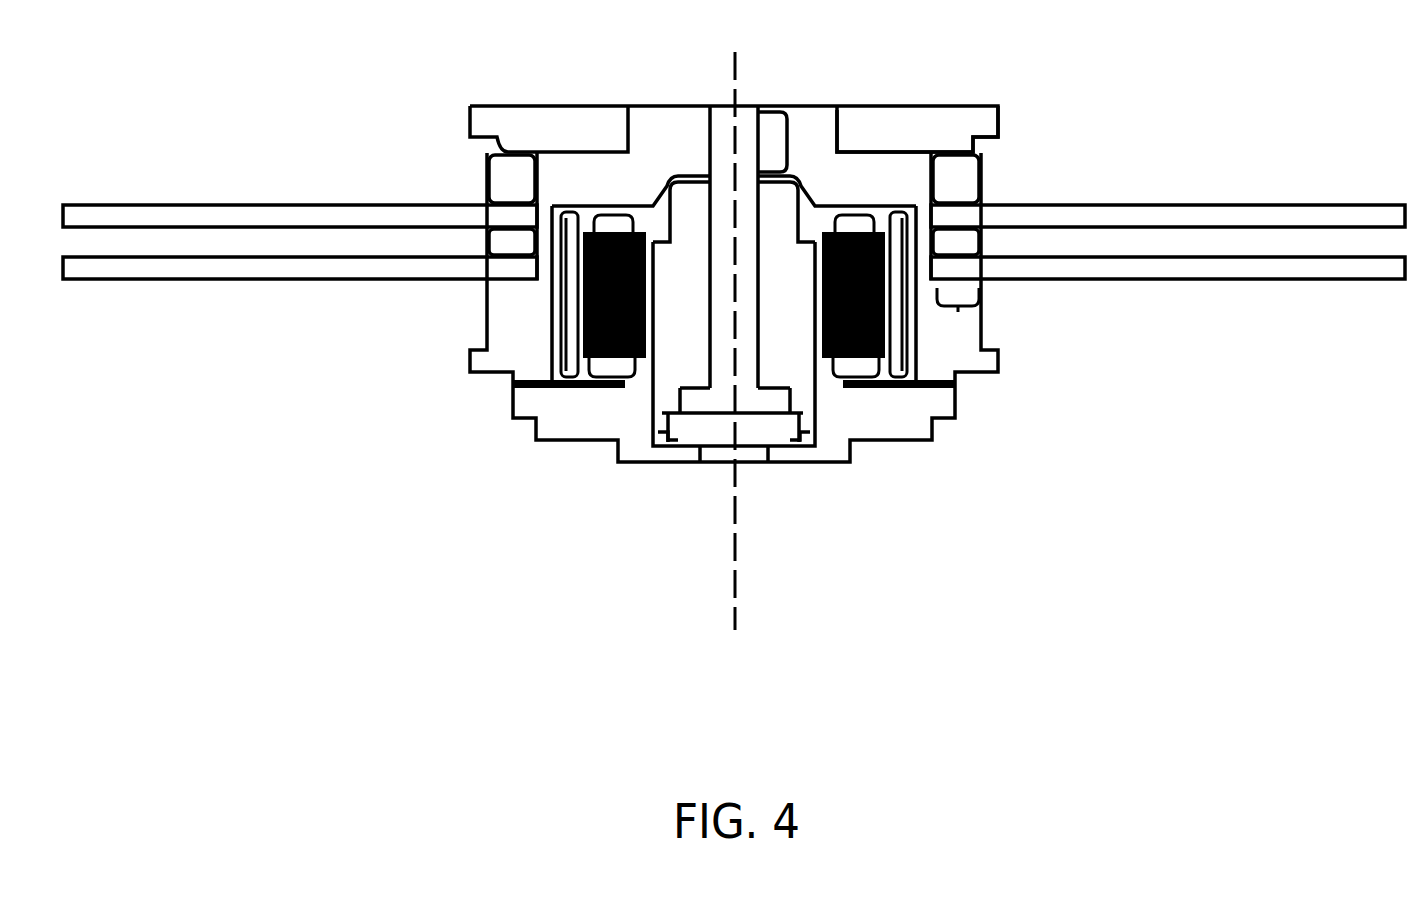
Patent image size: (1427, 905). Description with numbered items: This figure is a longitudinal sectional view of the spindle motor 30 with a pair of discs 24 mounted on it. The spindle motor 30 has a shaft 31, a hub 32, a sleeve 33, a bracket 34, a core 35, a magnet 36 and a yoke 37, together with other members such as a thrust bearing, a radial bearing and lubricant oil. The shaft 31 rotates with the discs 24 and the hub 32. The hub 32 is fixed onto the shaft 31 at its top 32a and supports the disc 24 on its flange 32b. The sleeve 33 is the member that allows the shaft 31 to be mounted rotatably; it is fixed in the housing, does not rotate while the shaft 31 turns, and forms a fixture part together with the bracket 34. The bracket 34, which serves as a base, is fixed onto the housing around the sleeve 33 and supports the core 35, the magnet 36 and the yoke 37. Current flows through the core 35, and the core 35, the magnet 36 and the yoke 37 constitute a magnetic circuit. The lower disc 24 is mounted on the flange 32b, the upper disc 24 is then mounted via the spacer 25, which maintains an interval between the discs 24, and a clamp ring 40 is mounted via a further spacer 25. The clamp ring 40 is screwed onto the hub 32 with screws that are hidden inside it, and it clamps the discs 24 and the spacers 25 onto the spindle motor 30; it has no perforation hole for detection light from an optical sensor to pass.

The disc 24 is at (1248, 213).
The spacer 25 is at (963, 244).
The spindle motor 30 is at (470, 459).
The shaft 31 is at (745, 120).
The hub 32 is at (663, 106).
The top 32a is at (787, 143).
The flange 32b is at (955, 308).
The sleeve 33 is at (797, 373).
The bracket 34 is at (896, 428).
The core 35 is at (568, 388).
The magnet 36 is at (578, 342).
The yoke 37 is at (555, 299).
The clamp ring 40 is at (902, 120).